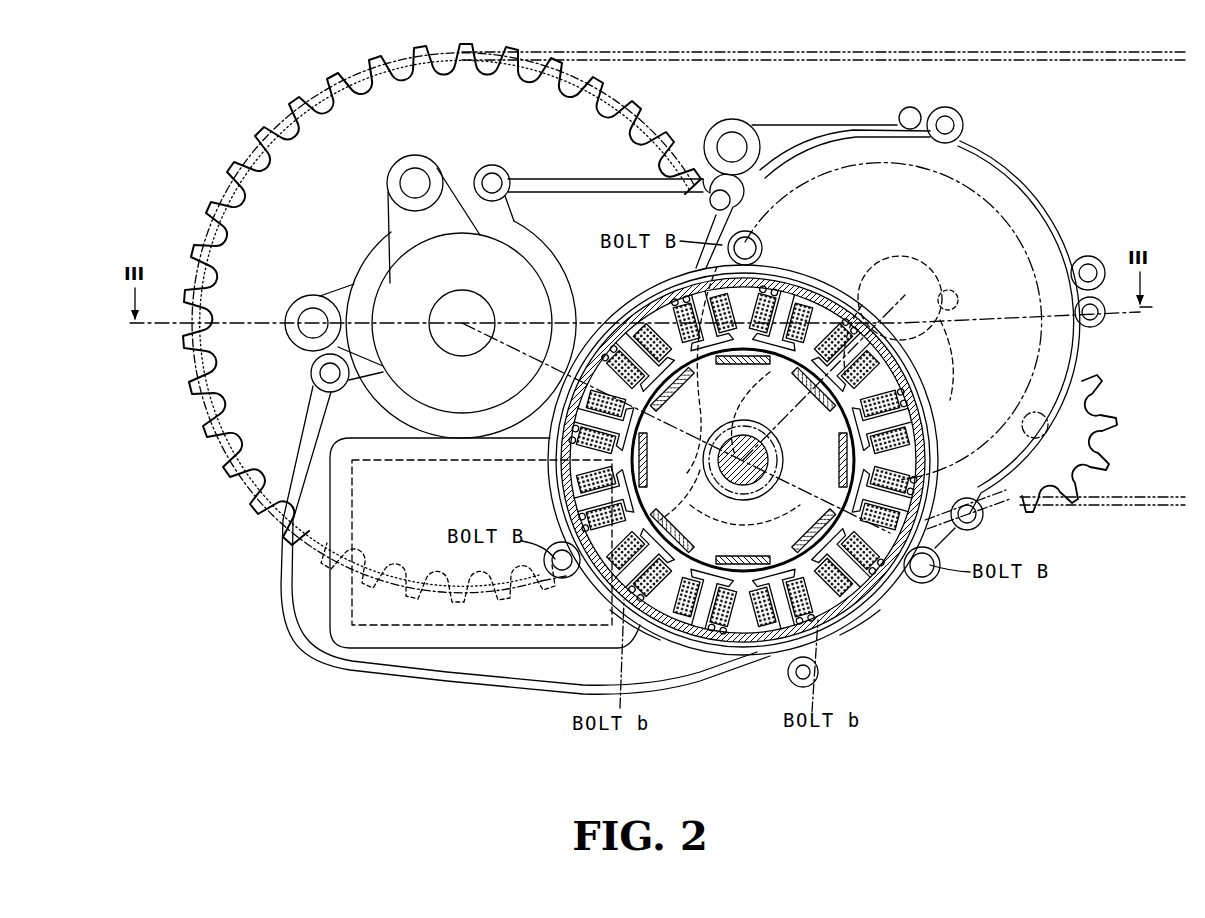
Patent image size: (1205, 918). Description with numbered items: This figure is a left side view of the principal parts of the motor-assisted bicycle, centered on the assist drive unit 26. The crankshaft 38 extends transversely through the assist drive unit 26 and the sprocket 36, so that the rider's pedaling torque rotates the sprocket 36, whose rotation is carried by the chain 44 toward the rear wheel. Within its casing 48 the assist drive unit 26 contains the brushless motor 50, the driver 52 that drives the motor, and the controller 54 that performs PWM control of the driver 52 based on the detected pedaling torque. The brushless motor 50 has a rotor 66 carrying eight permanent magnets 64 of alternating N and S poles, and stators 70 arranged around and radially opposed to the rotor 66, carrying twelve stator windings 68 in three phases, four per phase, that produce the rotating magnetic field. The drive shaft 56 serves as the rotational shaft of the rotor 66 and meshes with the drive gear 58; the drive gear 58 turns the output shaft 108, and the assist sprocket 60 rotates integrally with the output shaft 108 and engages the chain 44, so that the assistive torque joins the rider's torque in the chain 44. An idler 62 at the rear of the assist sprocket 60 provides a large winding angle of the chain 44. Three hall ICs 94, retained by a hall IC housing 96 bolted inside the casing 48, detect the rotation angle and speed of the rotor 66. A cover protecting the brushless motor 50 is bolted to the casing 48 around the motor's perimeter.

The assist drive unit 26 is at (581, 499).
The sprocket 36 is at (293, 157).
The crankshaft 38 is at (458, 292).
The chain 44 is at (1125, 62).
The casing 48 is at (281, 575).
The brushless motor 50 is at (742, 479).
The driver 52 is at (432, 650).
The controller 54 is at (378, 640).
The drive shaft 56 is at (785, 438).
The drive gear 58 is at (1023, 176).
The assist sprocket 60 is at (905, 258).
The idler 62 is at (1090, 420).
The permanent magnets 64 is at (560, 487).
The rotor 66 is at (905, 588).
The stator windings 68 is at (752, 604).
The stators 70 is at (832, 612).
The hall ICs 94 is at (655, 628).
The hall IC housing 96 is at (858, 597).
The output shaft 108 is at (950, 292).